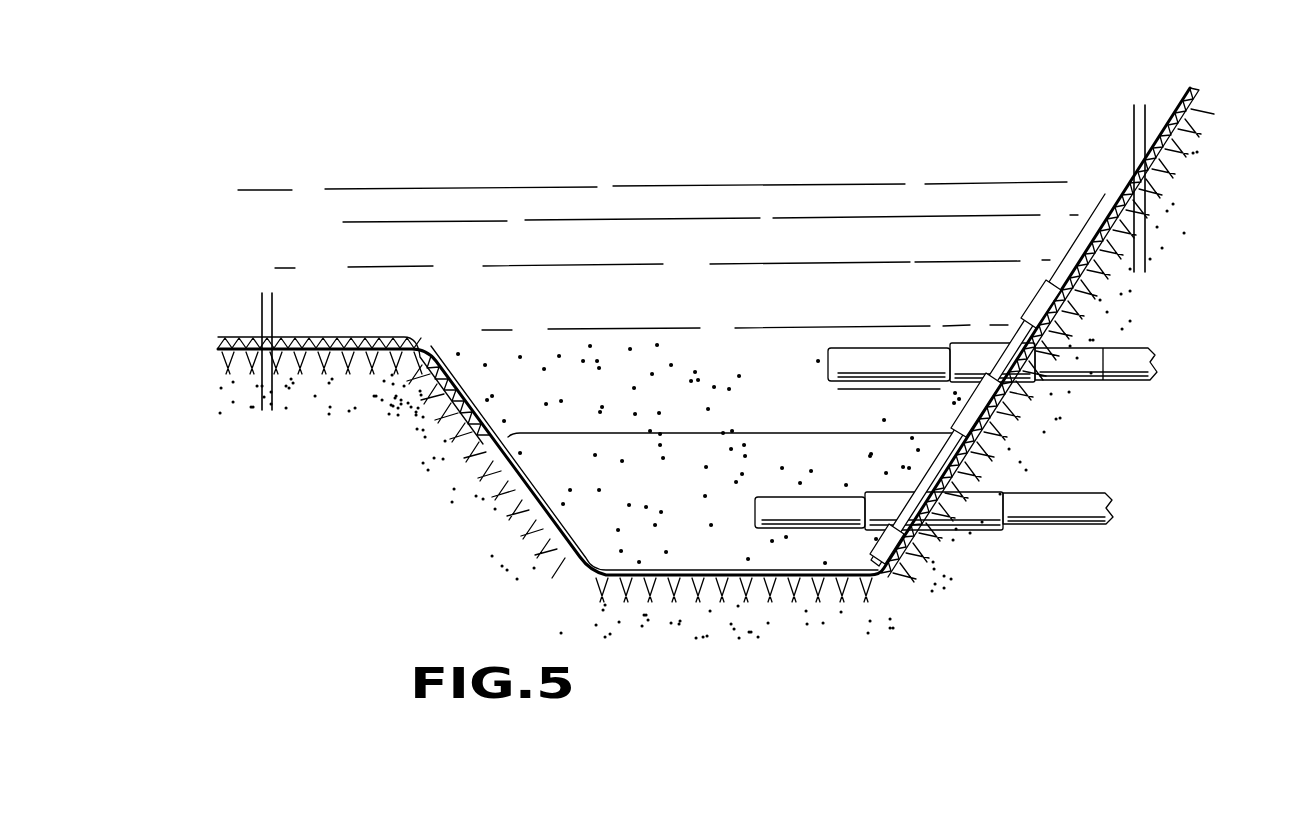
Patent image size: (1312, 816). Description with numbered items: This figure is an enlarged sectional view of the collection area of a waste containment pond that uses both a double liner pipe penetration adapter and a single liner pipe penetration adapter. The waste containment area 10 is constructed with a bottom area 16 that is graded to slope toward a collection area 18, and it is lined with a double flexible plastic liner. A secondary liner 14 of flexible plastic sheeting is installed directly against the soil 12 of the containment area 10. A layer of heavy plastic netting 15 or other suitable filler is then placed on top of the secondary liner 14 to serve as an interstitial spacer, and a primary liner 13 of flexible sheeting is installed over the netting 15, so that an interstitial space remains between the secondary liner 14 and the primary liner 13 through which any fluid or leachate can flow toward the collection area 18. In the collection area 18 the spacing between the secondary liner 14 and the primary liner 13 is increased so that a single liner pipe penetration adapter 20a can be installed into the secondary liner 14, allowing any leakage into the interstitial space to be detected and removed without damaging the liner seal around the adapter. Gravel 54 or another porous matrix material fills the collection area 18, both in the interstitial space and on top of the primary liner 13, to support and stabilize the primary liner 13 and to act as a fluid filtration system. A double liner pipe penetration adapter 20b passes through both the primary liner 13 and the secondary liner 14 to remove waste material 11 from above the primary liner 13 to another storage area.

The waste containment area 10 is at (498, 136).
The waste material 11 is at (597, 226).
The soil 12 is at (1208, 167).
The primary liner 13 is at (535, 433).
The secondary liner 14 is at (1187, 130).
The heavy plastic netting 15 is at (218, 341).
The bottom area 16 is at (343, 415).
The collection area 18 is at (612, 620).
The single liner pipe penetration adapter 20a is at (990, 478).
The double liner pipe penetration adapter 20b is at (1070, 333).
The gravel 54 is at (725, 328).